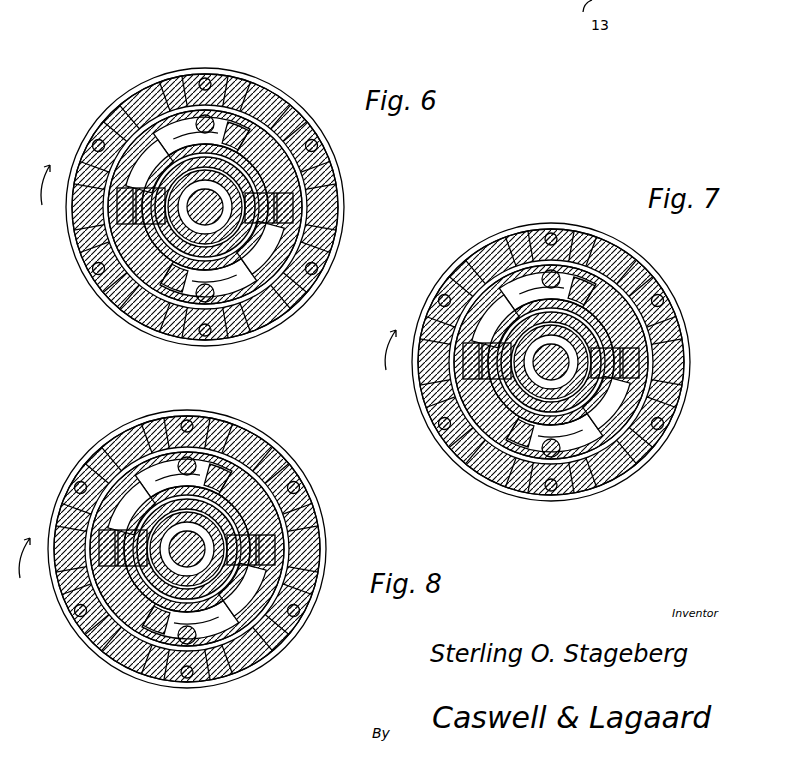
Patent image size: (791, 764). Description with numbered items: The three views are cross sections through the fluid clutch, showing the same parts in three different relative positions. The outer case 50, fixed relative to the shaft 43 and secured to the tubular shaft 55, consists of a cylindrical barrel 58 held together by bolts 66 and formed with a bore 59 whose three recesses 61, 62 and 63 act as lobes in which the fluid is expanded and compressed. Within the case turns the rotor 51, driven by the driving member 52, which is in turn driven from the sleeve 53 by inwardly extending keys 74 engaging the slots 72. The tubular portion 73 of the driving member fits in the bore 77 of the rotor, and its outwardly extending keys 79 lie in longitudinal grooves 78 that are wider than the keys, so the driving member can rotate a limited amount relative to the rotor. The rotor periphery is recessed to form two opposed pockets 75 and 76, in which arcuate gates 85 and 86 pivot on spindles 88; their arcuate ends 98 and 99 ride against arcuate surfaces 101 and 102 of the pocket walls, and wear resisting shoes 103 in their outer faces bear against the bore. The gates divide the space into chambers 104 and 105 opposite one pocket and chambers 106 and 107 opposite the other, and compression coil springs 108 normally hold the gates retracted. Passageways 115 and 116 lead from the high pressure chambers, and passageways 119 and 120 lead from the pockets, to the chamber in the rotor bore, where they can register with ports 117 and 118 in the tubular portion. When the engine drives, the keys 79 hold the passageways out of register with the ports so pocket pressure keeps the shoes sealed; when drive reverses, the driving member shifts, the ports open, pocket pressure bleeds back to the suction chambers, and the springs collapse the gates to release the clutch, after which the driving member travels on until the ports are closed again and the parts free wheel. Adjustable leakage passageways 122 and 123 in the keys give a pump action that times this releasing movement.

In FIG. 6, the shaft 43 is at (254, 294).
In FIG. 7, the shaft 43 is at (610, 443).
In FIG. 8, the shaft 43 is at (247, 629).
In FIG. 6, the case 50 is at (337, 168).
In FIG. 7, the case 50 is at (551, 362).
In FIG. 8, the case 50 is at (324, 534).
In FIG. 6, the rotor 51 is at (303, 207).
In FIG. 7, the rotor 51 is at (488, 287).
In FIG. 8, the rotor 51 is at (284, 562).
In FIG. 6, the driving member 52 is at (263, 223).
In FIG. 7, the driving member 52 is at (599, 399).
In FIG. 8, the driving member 52 is at (230, 591).
In FIG. 6, the sleeve 53 is at (288, 262).
In FIG. 7, the sleeve 53 is at (649, 381).
In FIG. 8, the sleeve 53 is at (239, 635).
In FIG. 6, the tubular shaft 55 is at (163, 133).
In FIG. 7, the tubular shaft 55 is at (611, 423).
In FIG. 8, the tubular shaft 55 is at (102, 547).
In FIG. 6, the cylindrical barrel 58 is at (287, 126).
In FIG. 7, the cylindrical barrel 58 is at (583, 252).
In FIG. 8, the cylindrical barrel 58 is at (296, 513).
In FIG. 6, the bore 59 is at (257, 110).
In FIG. 7, the bore 59 is at (654, 400).
In FIG. 8, the bore 59 is at (276, 613).
In FIG. 6, the recess 61 is at (184, 125).
In FIG. 7, the recess 61 is at (538, 278).
In FIG. 8, the recess 61 is at (198, 465).
In FIG. 6, the recess 62 is at (282, 278).
In FIG. 7, the recess 62 is at (644, 411).
In FIG. 8, the recess 62 is at (287, 581).
In FIG. 6, the recess 63 is at (128, 286).
In FIG. 7, the recess 63 is at (443, 385).
In FIG. 8, the recess 63 is at (82, 582).
In FIG. 6, the bolts 66 is at (92, 140).
In FIG. 7, the bolts 66 is at (438, 297).
In FIG. 8, the bolts 66 is at (187, 420).
In FIG. 6, the slots 72 is at (135, 143).
In FIG. 6, the tubular portion 73 is at (242, 289).
In FIG. 7, the tubular portion 73 is at (597, 439).
In FIG. 8, the tubular portion 73 is at (142, 471).
In FIG. 6, the keys 74 is at (107, 157).
In FIG. 7, the keys 74 is at (470, 288).
In FIG. 8, the keys 74 is at (124, 458).
In FIG. 6, the pocket 75 is at (250, 129).
In FIG. 7, the pocket 75 is at (635, 329).
In FIG. 8, the pocket 75 is at (222, 466).
In FIG. 6, the pocket 76 is at (180, 294).
In FIG. 7, the pocket 76 is at (521, 447).
In FIG. 8, the pocket 76 is at (162, 635).
In FIG. 6, the bore 77 is at (156, 132).
In FIG. 7, the bore 77 is at (511, 282).
In FIG. 8, the bore 77 is at (99, 569).
In FIG. 6, the grooves 78 is at (143, 129).
In FIG. 7, the grooves 78 is at (478, 293).
In FIG. 8, the grooves 78 is at (277, 506).
In FIG. 6, the keys 79 is at (303, 186).
In FIG. 7, the keys 79 is at (462, 316).
In FIG. 8, the keys 79 is at (121, 474).
In FIG. 6, the gate 85 is at (226, 130).
In FIG. 7, the gate 85 is at (564, 283).
In FIG. 8, the gate 85 is at (212, 473).
In FIG. 6, the gate 86 is at (192, 296).
In FIG. 7, the gate 86 is at (534, 450).
In FIG. 8, the gate 86 is at (173, 638).
In FIG. 6, the spindles 88 is at (203, 115).
In FIG. 7, the spindles 88 is at (549, 270).
In FIG. 8, the spindles 88 is at (183, 458).
In FIG. 6, the arcuate end 98 is at (184, 135).
In FIG. 7, the arcuate end 98 is at (535, 289).
In FIG. 8, the arcuate end 98 is at (207, 621).
In FIG. 6, the arcuate end 99 is at (265, 134).
In FIG. 7, the arcuate end 99 is at (613, 290).
In FIG. 8, the arcuate end 99 is at (248, 476).
In FIG. 6, the arcuate surface 101 is at (170, 130).
In FIG. 7, the arcuate surface 101 is at (520, 283).
In FIG. 8, the arcuate surface 101 is at (221, 627).
In FIG. 6, the arcuate surface 102 is at (282, 143).
In FIG. 7, the arcuate surface 102 is at (632, 304).
In FIG. 8, the arcuate surface 102 is at (262, 483).
In FIG. 6, the wear resisting shoes 103 is at (140, 302).
In FIG. 7, the wear resisting shoes 103 is at (591, 270).
In FIG. 8, the wear resisting shoes 103 is at (248, 470).
In FIG. 6, the chamber 104 is at (218, 128).
In FIG. 7, the chamber 104 is at (552, 282).
In FIG. 6, the chamber 105 is at (302, 129).
In FIG. 7, the chamber 105 is at (646, 280).
In FIG. 6, the chamber 106 is at (230, 293).
In FIG. 7, the chamber 106 is at (574, 449).
In FIG. 6, the chamber 107 is at (99, 264).
In FIG. 7, the chamber 107 is at (461, 441).
In FIG. 8, the compression coil springs 108 is at (151, 466).
In FIG. 6, the passageway 115 is at (297, 168).
In FIG. 7, the passageway 115 is at (638, 313).
In FIG. 8, the passageway 115 is at (264, 485).
In FIG. 6, the passageway 116 is at (115, 236).
In FIG. 7, the passageway 116 is at (460, 390).
In FIG. 8, the passageway 116 is at (113, 609).
In FIG. 6, the port 117 is at (285, 156).
In FIG. 7, the port 117 is at (644, 342).
In FIG. 8, the port 117 is at (276, 515).
In FIG. 6, the port 118 is at (143, 291).
In FIG. 7, the port 118 is at (462, 418).
In FIG. 8, the port 118 is at (86, 521).
In FIG. 6, the passageway 119 is at (276, 110).
In FIG. 7, the passageway 119 is at (615, 260).
In FIG. 8, the passageway 119 is at (246, 445).
In FIG. 6, the passageway 120 is at (164, 298).
In FIG. 7, the passageway 120 is at (496, 445).
In FIG. 8, the passageway 120 is at (152, 643).
In FIG. 6, the adjustable leakage passageway 122 is at (105, 216).
In FIG. 7, the adjustable leakage passageway 122 is at (452, 372).
In FIG. 8, the adjustable leakage passageway 122 is at (111, 484).
In FIG. 6, the adjustable leakage passageway 123 is at (284, 197).
In FIG. 7, the adjustable leakage passageway 123 is at (631, 371).
In FIG. 8, the adjustable leakage passageway 123 is at (267, 549).